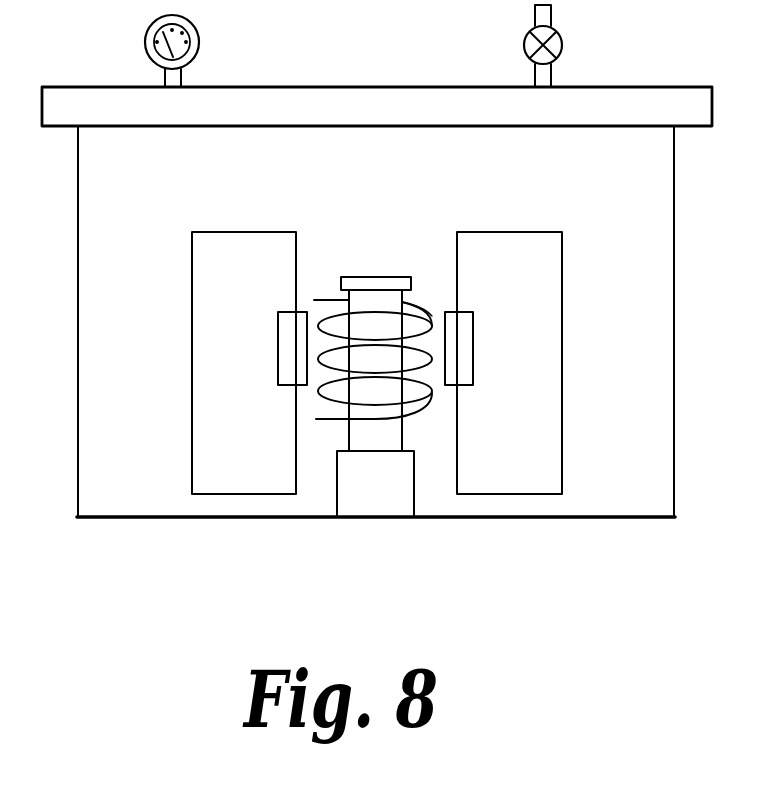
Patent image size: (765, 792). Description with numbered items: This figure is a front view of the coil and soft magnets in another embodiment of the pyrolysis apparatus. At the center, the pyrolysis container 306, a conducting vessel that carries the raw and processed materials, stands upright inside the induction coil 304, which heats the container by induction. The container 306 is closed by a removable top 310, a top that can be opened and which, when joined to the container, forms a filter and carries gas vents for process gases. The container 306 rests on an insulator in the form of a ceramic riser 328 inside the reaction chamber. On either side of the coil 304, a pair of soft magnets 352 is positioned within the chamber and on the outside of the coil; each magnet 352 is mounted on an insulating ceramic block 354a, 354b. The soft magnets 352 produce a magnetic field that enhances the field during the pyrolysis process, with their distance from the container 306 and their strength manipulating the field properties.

The ceramic block 354a is at (244, 232).
The ceramic block 354b is at (500, 232).
The soft magnet 352 is at (278, 338).
The induction coil 304 is at (332, 298).
The pyrolysis container 306 is at (404, 298).
The removable top 310 is at (397, 277).
The ceramic riser 328 is at (414, 494).